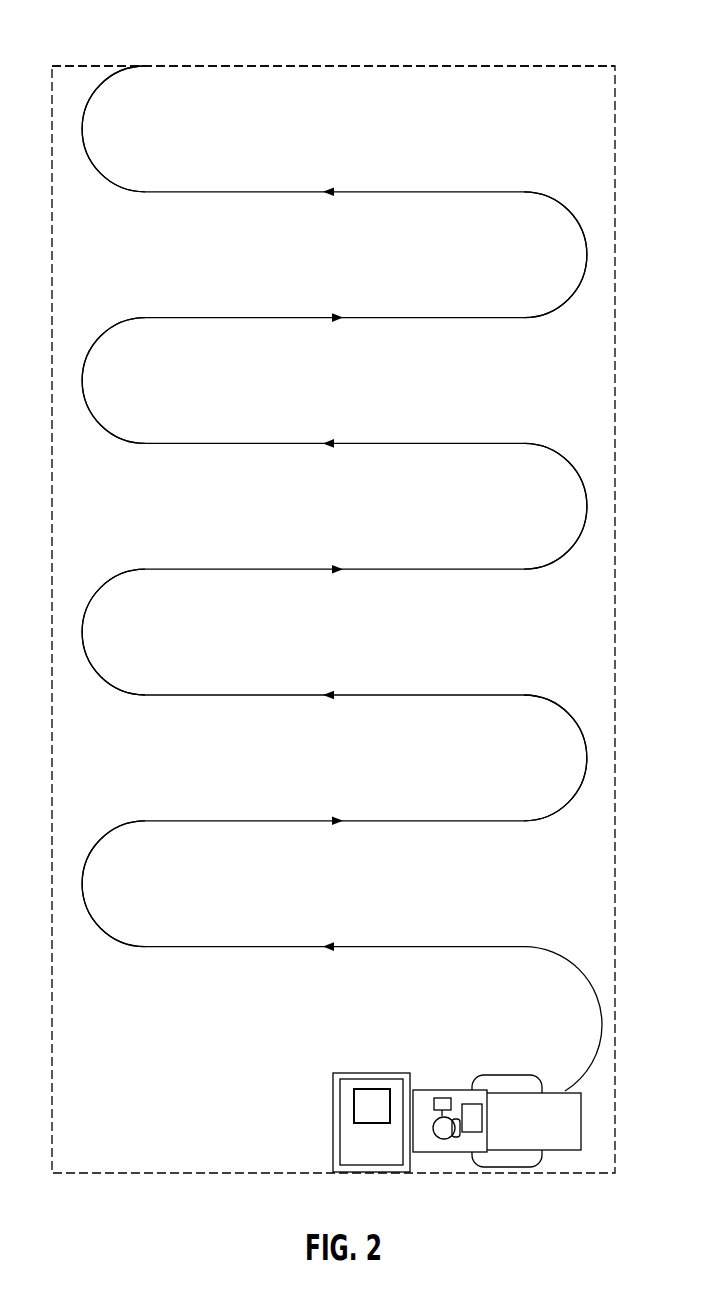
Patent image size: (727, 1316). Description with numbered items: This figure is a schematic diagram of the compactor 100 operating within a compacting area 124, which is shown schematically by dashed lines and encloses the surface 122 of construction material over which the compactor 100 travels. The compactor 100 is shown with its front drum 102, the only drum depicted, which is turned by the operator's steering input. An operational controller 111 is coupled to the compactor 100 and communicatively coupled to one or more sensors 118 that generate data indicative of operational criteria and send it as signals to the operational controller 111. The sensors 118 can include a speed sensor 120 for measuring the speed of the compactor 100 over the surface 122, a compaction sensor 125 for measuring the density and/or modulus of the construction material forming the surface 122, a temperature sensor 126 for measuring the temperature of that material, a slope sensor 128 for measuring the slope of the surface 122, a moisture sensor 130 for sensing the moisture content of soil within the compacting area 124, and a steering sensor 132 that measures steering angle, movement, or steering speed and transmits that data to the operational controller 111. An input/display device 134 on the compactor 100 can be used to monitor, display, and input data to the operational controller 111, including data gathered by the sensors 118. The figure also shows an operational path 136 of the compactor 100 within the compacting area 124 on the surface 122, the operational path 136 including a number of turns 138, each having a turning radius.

The compactor 100 is at (355, 1152).
The front drum 102 is at (529, 1087).
The operational controller 111 is at (448, 1091).
The sensors 118 is at (363, 1107).
The speed sensor 120 is at (372, 1106).
The surface 122 is at (501, 72).
The compacting area 124 is at (226, 65).
The compaction sensor 125 is at (372, 1106).
The temperature sensor 126 is at (372, 1106).
The slope sensor 128 is at (372, 1106).
The moisture sensor 130 is at (372, 1106).
The steering sensor 132 is at (372, 1106).
The input/display device 134 is at (472, 1105).
The operational path 136 is at (430, 190).
The turns 138 is at (82, 130).